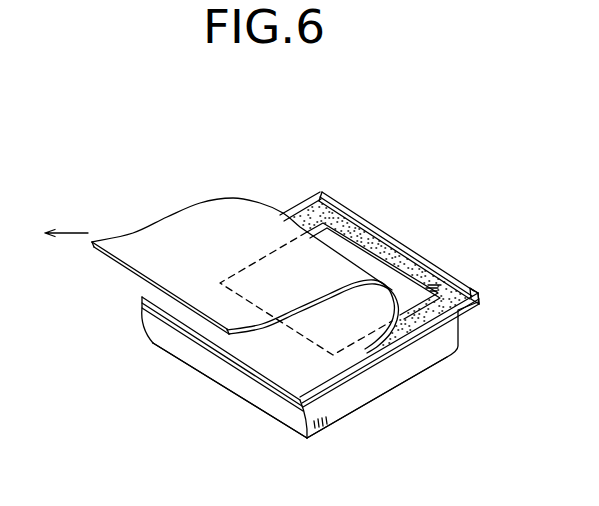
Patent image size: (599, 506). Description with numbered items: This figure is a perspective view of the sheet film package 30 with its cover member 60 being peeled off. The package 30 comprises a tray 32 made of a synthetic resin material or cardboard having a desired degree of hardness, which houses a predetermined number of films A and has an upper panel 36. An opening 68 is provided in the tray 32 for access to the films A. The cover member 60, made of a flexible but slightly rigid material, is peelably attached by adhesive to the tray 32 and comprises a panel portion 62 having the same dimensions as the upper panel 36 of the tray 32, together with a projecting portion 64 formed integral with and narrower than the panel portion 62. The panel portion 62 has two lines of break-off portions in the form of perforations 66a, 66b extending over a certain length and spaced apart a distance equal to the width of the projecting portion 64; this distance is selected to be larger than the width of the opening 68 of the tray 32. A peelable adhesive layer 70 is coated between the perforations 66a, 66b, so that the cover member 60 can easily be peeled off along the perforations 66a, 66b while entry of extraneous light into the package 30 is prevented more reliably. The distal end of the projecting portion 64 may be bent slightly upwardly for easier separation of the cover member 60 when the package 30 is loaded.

The sheet film package 30 is at (243, 405).
The tray 32 is at (360, 397).
The upper panel 36 is at (363, 223).
The cover member 60 is at (220, 226).
The panel portion 62 is at (323, 373).
The projecting portion 64 is at (150, 253).
The perforation 66a is at (367, 352).
The perforation 66b is at (303, 210).
The opening 68 is at (383, 270).
The peelable adhesive layer 70 is at (440, 270).
The films A is at (479, 297).